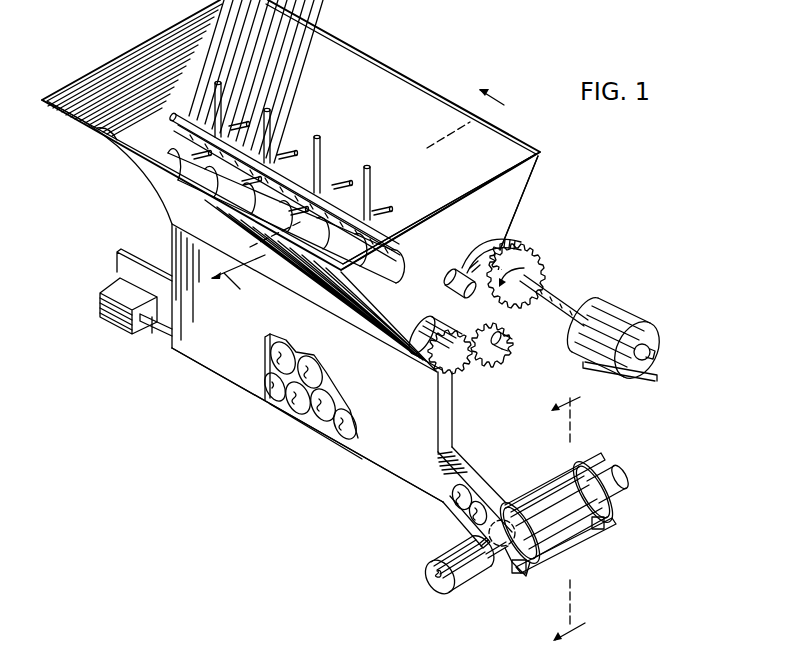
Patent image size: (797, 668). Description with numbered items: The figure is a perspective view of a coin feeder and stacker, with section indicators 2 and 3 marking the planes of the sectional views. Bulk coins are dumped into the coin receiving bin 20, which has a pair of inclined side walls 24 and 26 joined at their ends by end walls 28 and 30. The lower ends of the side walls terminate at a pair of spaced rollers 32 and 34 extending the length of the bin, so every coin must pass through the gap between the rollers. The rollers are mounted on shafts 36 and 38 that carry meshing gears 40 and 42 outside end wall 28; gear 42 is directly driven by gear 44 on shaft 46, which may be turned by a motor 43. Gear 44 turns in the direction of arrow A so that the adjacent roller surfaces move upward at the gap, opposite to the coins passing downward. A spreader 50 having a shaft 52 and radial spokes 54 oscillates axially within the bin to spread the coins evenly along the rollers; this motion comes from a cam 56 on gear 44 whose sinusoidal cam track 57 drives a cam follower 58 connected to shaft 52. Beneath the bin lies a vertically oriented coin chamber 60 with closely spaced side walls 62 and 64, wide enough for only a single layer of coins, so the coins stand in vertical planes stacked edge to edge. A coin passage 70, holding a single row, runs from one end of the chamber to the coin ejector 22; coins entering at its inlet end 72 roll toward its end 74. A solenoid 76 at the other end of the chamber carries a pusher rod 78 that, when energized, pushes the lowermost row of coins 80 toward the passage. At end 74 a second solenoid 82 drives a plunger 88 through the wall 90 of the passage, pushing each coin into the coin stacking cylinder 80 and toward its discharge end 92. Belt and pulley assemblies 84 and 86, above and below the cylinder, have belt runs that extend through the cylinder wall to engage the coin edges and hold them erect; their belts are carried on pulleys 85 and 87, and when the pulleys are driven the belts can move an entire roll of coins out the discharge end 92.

The section line 2- 2 is at (367, 195).
The section line 3- 3 is at (575, 510).
The arrow A is at (527, 269).
The coin receiving bin 20 is at (403, 100).
The coin ejector 22 is at (625, 460).
The inclined side wall 24 is at (512, 148).
The inclined side wall 26 is at (93, 132).
The end wall 28 is at (413, 252).
The end wall 30 is at (152, 50).
The roller 32 is at (426, 320).
The roller 34 is at (445, 296).
The shaft 36 is at (481, 366).
The shaft 38 is at (507, 347).
The gear 40 is at (437, 373).
The gear 42 is at (510, 336).
The motor 43 is at (647, 327).
The gear 44 is at (542, 283).
The shaft 46 is at (532, 300).
The spreader 50 is at (344, 200).
The shaft 52 is at (324, 200).
The radial spokes 54 is at (222, 107).
The cam 56 is at (493, 240).
The cam track 57 is at (507, 247).
The cam follower 58 is at (470, 268).
The coin chamber 60 is at (453, 412).
The side wall 62 is at (390, 453).
The side wall 64 is at (453, 432).
The coin passage 70 is at (466, 520).
The inlet end 72 is at (437, 482).
The end 74 is at (513, 576).
The solenoid 76 is at (137, 335).
The pusher rod 78 is at (165, 330).
The coin stacking cylinder 80 is at (350, 466).
The solenoid 82 is at (462, 590).
The belt and pulley assembly 84 is at (585, 447).
The pulleys 85 is at (597, 463).
The belt and pulley assembly 86 is at (590, 545).
The pulleys 87 is at (602, 525).
The plunger 88 is at (492, 564).
The wall 90 is at (488, 522).
The discharge end 92 is at (626, 480).